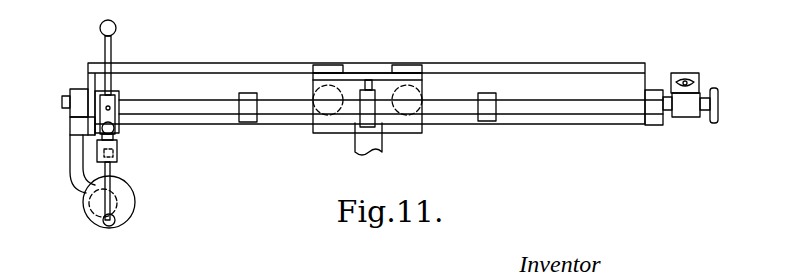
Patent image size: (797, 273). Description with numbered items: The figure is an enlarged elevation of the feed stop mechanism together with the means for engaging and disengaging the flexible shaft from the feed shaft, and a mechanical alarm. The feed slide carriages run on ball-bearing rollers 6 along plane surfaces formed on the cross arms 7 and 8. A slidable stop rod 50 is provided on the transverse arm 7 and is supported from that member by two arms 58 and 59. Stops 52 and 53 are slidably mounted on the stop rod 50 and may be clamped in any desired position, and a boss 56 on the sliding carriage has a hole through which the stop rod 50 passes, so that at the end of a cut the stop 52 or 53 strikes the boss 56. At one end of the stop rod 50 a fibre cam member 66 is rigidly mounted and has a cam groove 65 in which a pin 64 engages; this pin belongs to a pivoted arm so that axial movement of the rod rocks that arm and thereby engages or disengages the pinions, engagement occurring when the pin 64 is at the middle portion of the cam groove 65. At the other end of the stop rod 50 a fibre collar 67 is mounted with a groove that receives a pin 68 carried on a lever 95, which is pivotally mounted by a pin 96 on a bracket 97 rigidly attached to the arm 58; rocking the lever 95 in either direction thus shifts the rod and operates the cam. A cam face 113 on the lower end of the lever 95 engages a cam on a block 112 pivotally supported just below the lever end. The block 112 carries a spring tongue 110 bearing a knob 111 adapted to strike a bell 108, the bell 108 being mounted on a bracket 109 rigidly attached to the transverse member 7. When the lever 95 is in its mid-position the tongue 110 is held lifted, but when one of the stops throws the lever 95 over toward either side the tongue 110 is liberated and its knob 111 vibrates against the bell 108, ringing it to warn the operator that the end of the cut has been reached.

The ball-bearing rollers 6 is at (401, 65).
The cross arm 7 is at (211, 80).
The cross arm 8 is at (319, 134).
The stop rod 50 is at (200, 110).
The stop 52 is at (247, 108).
The stop 53 is at (490, 108).
The boss 56 is at (370, 108).
The arm 58 is at (78, 112).
The arm 59 is at (654, 120).
The pin 64 is at (684, 79).
The cam groove 65 is at (690, 80).
The fibre cam member 66 is at (698, 90).
The fibre collar 67 is at (110, 106).
The pin 68 is at (118, 106).
The lever 95 is at (106, 53).
The pin 96 is at (115, 132).
The bracket 97 is at (78, 125).
The bell 108 is at (133, 216).
The bracket 109 is at (78, 163).
The spring tongue 110 is at (118, 192).
The knob 111 is at (104, 225).
The block 112 is at (87, 180).
The cam face 113 is at (117, 153).